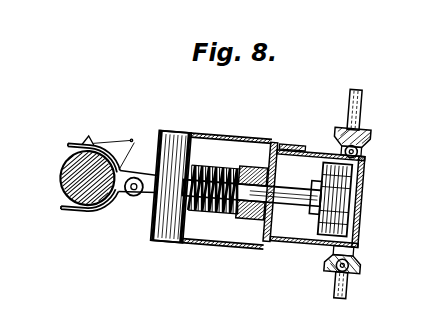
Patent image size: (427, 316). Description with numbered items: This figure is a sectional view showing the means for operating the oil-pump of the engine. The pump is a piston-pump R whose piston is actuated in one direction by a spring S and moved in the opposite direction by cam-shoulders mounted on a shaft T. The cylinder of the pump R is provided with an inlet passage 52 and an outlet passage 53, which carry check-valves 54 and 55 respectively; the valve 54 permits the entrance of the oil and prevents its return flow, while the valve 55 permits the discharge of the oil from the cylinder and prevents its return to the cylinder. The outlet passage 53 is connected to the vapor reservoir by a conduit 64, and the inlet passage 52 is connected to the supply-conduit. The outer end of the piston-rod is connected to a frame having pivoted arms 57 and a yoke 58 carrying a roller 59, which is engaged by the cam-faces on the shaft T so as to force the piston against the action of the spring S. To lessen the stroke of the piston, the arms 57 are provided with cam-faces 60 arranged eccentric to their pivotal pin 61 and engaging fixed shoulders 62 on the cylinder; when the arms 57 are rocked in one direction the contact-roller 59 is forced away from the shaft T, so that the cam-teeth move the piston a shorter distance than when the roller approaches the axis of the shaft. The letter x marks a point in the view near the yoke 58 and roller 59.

The shaft T is at (60, 182).
The yoke 58 is at (85, 142).
The pivot point x is at (135, 141).
The roller 59 is at (133, 206).
The pivotal pin 61 is at (178, 136).
The spring S is at (212, 178).
The pivoted arms 57 is at (253, 141).
The fixed shoulders 62 is at (276, 148).
The cam-faces 60 is at (288, 150).
The conduit 64 is at (363, 104).
The check-valve 55 is at (367, 141).
The outlet passage 53 is at (366, 156).
The piston-pump R is at (364, 178).
The inlet passage 52 is at (356, 270).
The check-valve 54 is at (329, 267).